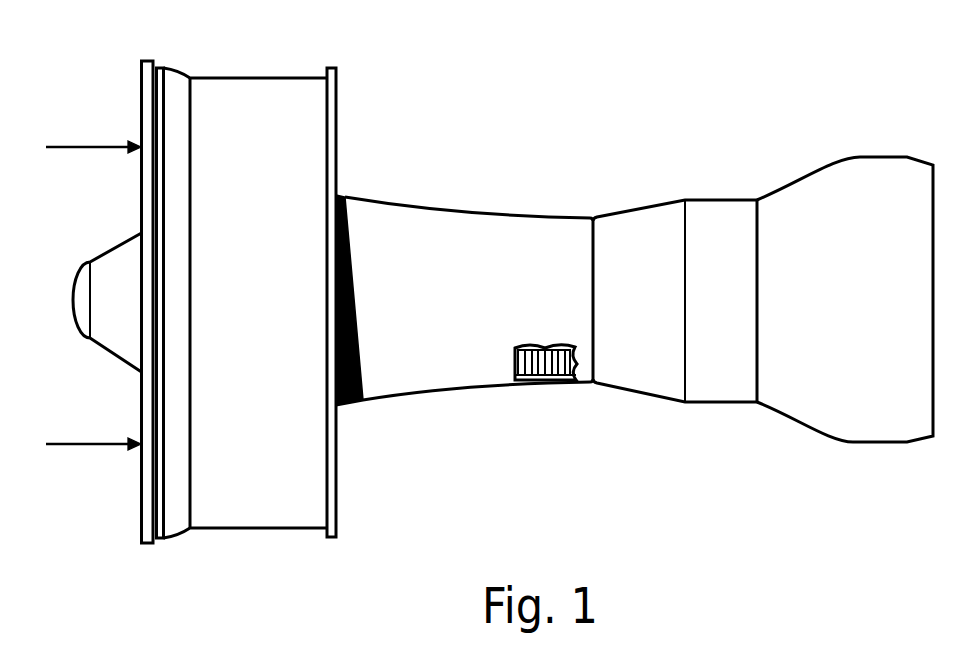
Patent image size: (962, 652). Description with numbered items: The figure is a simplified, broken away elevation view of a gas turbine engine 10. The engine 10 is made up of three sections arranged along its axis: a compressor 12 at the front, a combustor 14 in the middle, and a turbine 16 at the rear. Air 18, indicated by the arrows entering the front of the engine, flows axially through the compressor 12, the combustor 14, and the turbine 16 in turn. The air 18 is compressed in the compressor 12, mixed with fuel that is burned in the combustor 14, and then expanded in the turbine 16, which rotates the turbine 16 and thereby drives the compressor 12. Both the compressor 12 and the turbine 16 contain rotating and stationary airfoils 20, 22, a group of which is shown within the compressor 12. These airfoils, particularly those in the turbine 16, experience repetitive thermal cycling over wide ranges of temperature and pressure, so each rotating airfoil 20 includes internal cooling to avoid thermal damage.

The gas turbine engine 10 is at (781, 100).
The compressor 12 is at (468, 317).
The combustor 14 is at (651, 317).
The turbine 16 is at (858, 317).
The air 18 is at (79, 297).
The rotating airfoils 20 is at (522, 378).
The stationary airfoils 22 is at (537, 378).